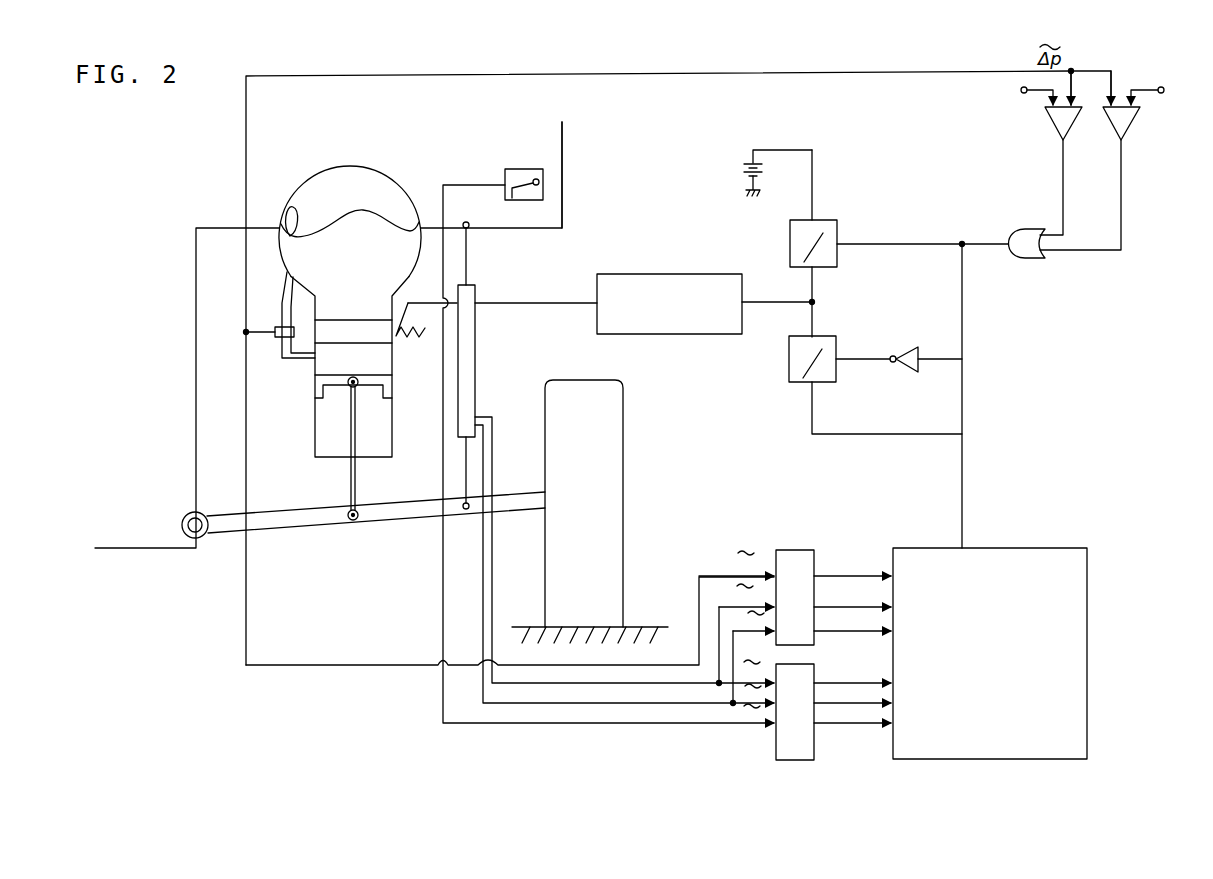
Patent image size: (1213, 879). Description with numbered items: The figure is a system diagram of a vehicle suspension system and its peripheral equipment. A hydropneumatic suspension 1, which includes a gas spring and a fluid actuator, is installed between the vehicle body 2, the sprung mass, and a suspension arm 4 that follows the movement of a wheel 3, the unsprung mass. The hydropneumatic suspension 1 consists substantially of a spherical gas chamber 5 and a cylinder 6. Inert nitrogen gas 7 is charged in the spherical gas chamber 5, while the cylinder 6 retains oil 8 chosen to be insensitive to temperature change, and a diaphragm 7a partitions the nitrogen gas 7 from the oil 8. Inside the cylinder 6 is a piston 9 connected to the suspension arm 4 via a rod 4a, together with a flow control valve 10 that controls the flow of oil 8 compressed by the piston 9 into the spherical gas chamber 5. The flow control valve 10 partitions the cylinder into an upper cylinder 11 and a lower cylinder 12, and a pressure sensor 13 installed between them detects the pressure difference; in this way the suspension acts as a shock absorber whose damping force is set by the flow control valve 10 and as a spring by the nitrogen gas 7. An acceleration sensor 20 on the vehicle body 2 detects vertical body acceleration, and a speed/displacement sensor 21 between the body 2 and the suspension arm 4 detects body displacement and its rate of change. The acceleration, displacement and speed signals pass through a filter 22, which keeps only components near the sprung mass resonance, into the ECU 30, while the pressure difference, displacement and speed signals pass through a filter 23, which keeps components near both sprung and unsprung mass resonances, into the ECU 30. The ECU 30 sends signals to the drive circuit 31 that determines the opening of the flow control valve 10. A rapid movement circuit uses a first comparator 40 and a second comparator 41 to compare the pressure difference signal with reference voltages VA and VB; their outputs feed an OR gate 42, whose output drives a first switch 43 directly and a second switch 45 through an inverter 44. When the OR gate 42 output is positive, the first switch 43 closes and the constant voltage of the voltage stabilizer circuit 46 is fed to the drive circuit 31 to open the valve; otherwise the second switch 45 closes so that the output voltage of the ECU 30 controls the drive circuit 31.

The hydropneumatic suspension 1 is at (299, 408).
The vehicle body 2 is at (563, 151).
The wheel 3 is at (623, 475).
The suspension arm 4 is at (386, 523).
The rod 4a is at (358, 491).
The spherical gas chamber 5 is at (378, 168).
The cylinder 6 is at (393, 364).
The nitrogen gas 7 is at (385, 188).
The diaphragm 7a is at (297, 207).
The oil 8 is at (402, 263).
The piston 9 is at (385, 373).
The flow control valve 10 is at (388, 346).
The upper cylinder 11 is at (318, 315).
The lower cylinder 12 is at (318, 362).
The pressure sensor 13 is at (272, 341).
The acceleration sensor 20 is at (508, 172).
The speed/displacement sensor 21 is at (477, 357).
The filter 22 is at (826, 654).
The filter 23 is at (803, 550).
The ECU 30 is at (1087, 660).
The drive circuit 31 is at (683, 334).
The first comparator 40 is at (1052, 124).
The second comparator 41 is at (1134, 118).
The OR gate 42 is at (1033, 258).
The first switch 43 is at (830, 223).
The inverter 44 is at (916, 372).
The second switch 45 is at (829, 382).
The voltage stabilizer circuit 46 is at (745, 176).